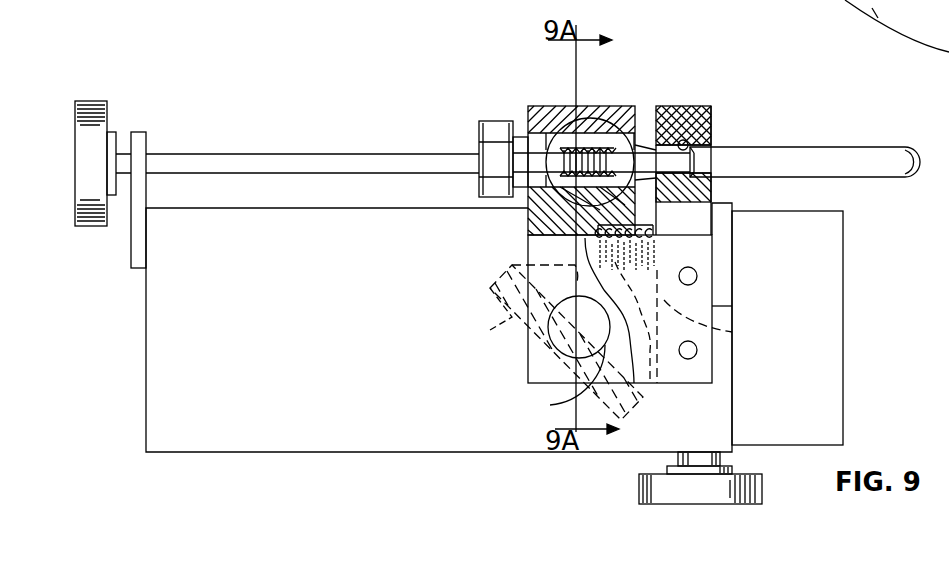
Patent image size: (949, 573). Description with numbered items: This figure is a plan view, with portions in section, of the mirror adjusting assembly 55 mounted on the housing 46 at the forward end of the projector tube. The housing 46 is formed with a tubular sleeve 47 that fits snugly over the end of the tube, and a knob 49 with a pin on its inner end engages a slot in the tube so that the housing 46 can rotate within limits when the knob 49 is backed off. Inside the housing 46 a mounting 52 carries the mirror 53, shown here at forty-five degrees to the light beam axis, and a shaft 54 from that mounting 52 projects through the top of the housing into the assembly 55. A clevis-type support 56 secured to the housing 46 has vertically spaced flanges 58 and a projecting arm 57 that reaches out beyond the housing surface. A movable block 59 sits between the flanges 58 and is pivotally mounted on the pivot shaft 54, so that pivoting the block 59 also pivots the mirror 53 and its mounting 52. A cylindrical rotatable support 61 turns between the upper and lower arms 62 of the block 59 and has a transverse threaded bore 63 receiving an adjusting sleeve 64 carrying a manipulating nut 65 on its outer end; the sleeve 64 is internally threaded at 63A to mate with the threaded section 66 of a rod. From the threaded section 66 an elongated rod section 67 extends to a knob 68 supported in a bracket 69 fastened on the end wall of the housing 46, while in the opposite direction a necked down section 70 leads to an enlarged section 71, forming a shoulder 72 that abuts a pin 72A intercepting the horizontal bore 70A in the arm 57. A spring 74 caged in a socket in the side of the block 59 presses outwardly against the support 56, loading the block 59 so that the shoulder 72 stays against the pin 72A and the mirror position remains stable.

The housing 46 is at (150, 352).
The tubular sleeve 47 is at (825, 372).
The knob 49 is at (640, 482).
The mounting 52 is at (490, 324).
The mirror 53 is at (495, 270).
The shaft 54 is at (568, 402).
The mirror adjusting assembly 55 is at (713, 237).
The clevis-type support 56 is at (712, 305).
The projecting arm 57 is at (672, 110).
The flanges 58 is at (527, 373).
The movable block 59 is at (527, 213).
The rotatable support 61 is at (565, 135).
The arms 62 is at (612, 107).
The threaded bore 63 is at (575, 110).
The internal threads 63A is at (645, 135).
The adjusting sleeve 64 is at (527, 130).
The manipulating nut 65 is at (488, 175).
The threaded section 66 is at (545, 212).
The elongated rod section 67 is at (232, 160).
The knob 68 is at (75, 127).
The bracket 69 is at (136, 248).
The necked down section 70 is at (653, 188).
The horizontal bore 70A is at (708, 108).
The enlarged section 71 is at (890, 147).
The shoulder 72 is at (692, 163).
The pin 72A is at (703, 135).
The spring 74 is at (728, 333).